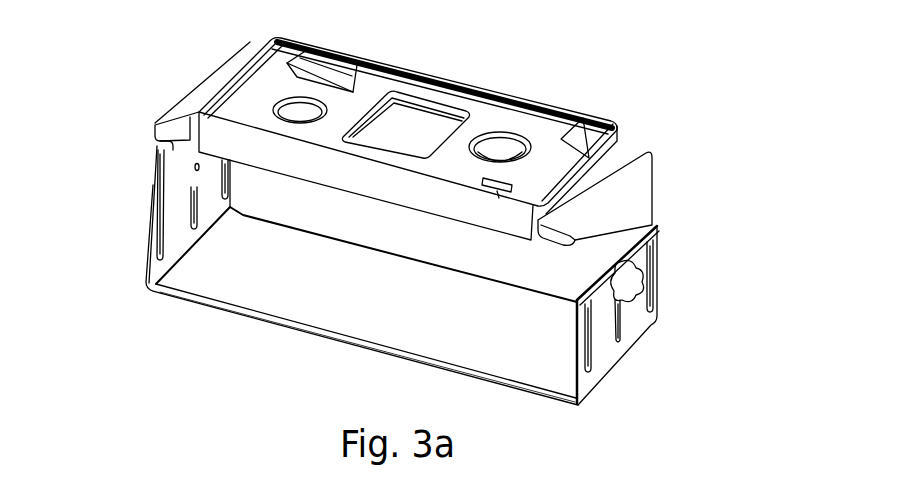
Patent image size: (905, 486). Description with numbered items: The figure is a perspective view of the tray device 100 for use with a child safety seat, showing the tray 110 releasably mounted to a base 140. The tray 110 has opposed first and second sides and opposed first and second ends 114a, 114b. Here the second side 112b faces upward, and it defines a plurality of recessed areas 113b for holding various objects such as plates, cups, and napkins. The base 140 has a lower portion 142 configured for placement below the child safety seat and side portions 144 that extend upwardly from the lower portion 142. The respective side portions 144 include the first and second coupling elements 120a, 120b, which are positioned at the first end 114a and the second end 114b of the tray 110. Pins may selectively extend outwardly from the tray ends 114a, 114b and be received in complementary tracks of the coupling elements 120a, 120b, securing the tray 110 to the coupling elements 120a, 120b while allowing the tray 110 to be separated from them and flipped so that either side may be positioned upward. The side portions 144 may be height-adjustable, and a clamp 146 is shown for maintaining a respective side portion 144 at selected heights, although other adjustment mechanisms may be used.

The device 100 is at (408, 222).
The tray 110 is at (404, 122).
The second side 112b is at (511, 119).
The recessed areas 113b is at (433, 135).
The first end 114a is at (589, 120).
The second end 114b is at (247, 63).
The first coupling element 120a is at (615, 158).
The second coupling element 120b is at (218, 82).
The base 140 is at (403, 277).
The lower portion 142 is at (328, 340).
The side portions 144 is at (142, 186).
The clamp 146 is at (634, 287).